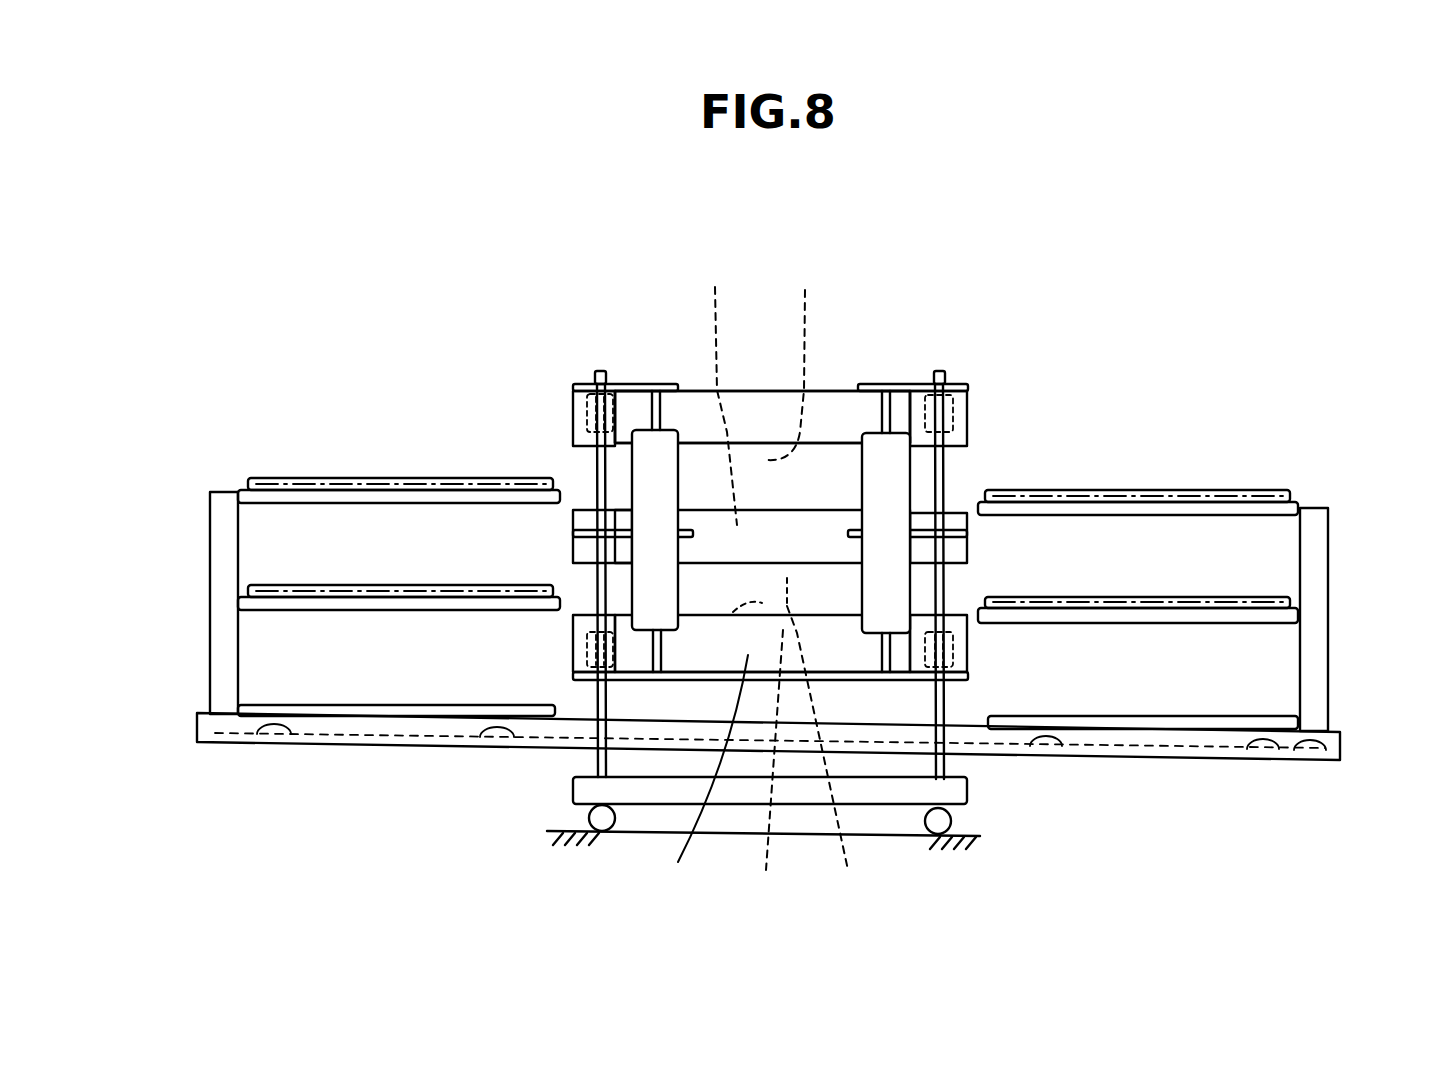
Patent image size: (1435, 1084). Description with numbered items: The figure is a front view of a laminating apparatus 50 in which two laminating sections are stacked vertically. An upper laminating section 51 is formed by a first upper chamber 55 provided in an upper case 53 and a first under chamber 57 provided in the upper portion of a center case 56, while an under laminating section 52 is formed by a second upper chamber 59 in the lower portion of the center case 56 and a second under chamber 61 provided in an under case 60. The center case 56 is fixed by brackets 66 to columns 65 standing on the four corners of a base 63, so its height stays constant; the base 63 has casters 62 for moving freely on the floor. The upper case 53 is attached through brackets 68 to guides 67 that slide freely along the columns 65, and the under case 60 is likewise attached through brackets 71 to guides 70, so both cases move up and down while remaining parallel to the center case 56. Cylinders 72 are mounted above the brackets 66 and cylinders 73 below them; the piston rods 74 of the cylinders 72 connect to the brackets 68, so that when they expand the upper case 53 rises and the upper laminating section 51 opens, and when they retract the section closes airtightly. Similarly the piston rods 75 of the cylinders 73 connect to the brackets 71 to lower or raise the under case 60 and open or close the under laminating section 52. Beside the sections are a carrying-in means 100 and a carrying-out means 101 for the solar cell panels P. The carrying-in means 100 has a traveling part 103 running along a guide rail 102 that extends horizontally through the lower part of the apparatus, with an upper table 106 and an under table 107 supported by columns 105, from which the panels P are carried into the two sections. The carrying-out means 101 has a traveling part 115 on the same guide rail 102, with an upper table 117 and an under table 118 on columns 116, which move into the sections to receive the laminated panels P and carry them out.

The laminating apparatus 50 is at (762, 255).
The upper laminating section 51 is at (978, 476).
The under laminating section 52 is at (548, 572).
The upper case 53 is at (763, 392).
The first upper chamber 55 is at (798, 352).
The center case 56 is at (708, 522).
The first under chamber 57 is at (717, 384).
The second upper chamber 59 is at (827, 759).
The under case 60 is at (701, 781).
The second under chamber 61 is at (759, 796).
The wheels 62 is at (587, 818).
The base 63 is at (978, 789).
The columns 65 is at (597, 372).
The brackets 66 is at (573, 545).
The guides 67 is at (567, 390).
The brackets 68 is at (630, 382).
The guides 70 is at (573, 647).
The brackets 71 is at (640, 680).
The cylinders 72 is at (595, 464).
The cylinders 73 is at (680, 590).
The piston rods 74 is at (657, 383).
The piston rods 75 is at (665, 650).
The carrying-in means 100 is at (1318, 493).
The carrying-out means 101 is at (228, 478).
The guide rail 102 is at (330, 742).
The traveling part 103 is at (1222, 716).
The columns 105 is at (1330, 655).
The upper table 106 is at (1228, 516).
The under table 107 is at (1137, 624).
The traveling part 115 is at (403, 706).
The columns 116 is at (210, 638).
The upper table 117 is at (357, 503).
The under table 118 is at (290, 610).
The solar cell panel P is at (440, 480).